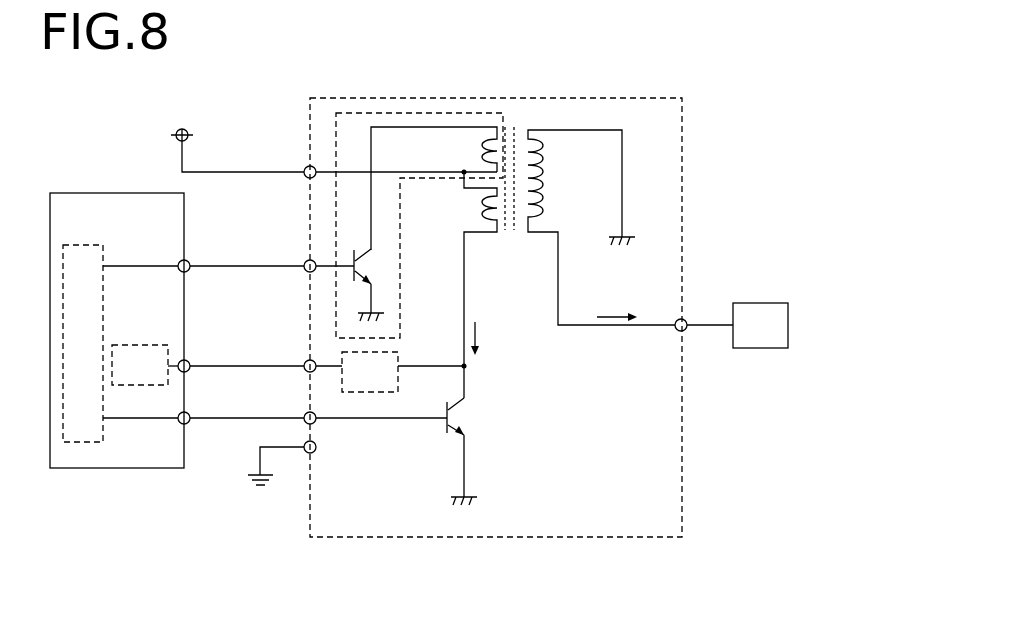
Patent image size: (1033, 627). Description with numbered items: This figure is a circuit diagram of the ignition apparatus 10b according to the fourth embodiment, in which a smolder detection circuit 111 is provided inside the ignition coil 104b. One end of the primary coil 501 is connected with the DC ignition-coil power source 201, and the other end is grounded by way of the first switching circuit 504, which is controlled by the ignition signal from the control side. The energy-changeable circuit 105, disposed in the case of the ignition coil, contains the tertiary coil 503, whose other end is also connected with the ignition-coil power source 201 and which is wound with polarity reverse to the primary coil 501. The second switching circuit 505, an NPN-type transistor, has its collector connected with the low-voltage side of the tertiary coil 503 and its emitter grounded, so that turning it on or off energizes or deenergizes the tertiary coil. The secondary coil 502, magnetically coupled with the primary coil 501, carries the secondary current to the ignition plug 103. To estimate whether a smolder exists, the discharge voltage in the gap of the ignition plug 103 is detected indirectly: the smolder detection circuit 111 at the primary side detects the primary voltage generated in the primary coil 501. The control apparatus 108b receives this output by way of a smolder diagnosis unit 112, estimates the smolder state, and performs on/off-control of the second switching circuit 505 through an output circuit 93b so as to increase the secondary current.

The ignition apparatus 10b is at (486, 79).
The ignition coil 104b is at (682, 125).
The energy-changeable circuit 105 is at (335, 133).
The tertiary coil 503 is at (485, 143).
The primary coil 501 is at (480, 205).
The secondary coil 502 is at (547, 197).
The second switching circuit 505 is at (367, 272).
The first switching circuit 504 is at (467, 418).
The smolder detection circuit 111 is at (400, 362).
The ignition-coil power source 201 is at (187, 123).
The control apparatus 108b is at (112, 470).
The output circuit 93b is at (92, 247).
The smolder diagnosis unit 112 is at (182, 352).
The ignition plug 103 is at (767, 348).